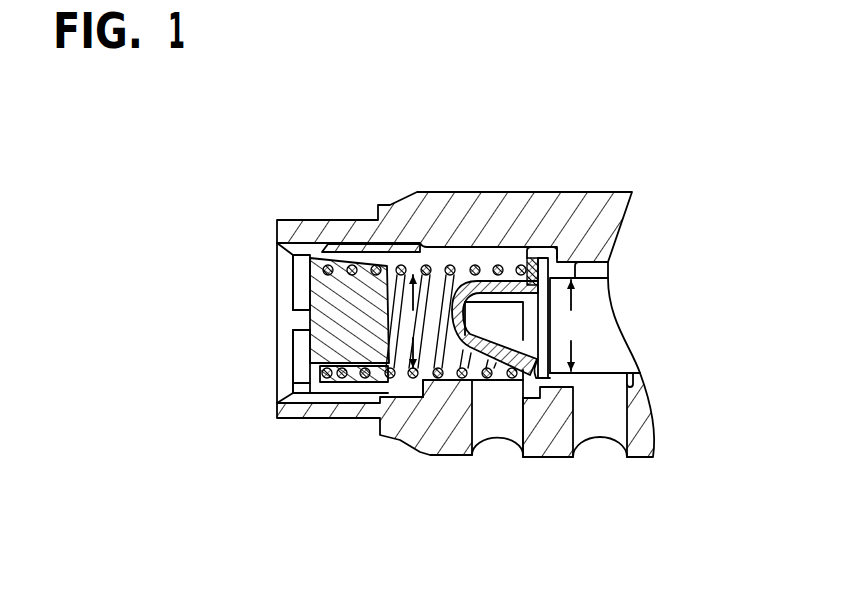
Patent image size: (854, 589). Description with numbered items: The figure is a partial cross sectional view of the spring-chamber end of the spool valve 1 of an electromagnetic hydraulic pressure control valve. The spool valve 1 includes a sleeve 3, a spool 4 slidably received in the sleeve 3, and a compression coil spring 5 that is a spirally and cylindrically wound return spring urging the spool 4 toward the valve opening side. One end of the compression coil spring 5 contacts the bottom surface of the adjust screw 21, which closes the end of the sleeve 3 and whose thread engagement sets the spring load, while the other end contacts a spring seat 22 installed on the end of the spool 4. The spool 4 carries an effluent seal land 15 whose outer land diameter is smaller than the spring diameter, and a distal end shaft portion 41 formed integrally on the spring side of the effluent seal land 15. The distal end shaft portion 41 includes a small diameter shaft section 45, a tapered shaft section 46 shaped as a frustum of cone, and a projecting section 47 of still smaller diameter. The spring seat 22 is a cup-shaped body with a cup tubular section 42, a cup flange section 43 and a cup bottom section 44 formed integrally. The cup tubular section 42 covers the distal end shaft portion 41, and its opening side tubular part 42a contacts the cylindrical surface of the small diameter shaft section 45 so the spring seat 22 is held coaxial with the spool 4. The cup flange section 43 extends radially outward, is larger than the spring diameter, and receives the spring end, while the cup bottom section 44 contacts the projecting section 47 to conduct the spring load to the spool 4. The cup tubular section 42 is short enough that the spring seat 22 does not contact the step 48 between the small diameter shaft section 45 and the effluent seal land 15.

The spool valve 1 is at (327, 186).
The sleeve 3 is at (406, 416).
The spool 4 is at (636, 317).
The compression coil spring 5 is at (372, 243).
The effluent seal land 15 is at (600, 318).
The adjust screw 21 is at (352, 348).
The spring seat 22 is at (640, 122).
The distal end shaft portion 41 is at (572, 515).
The cup tubular section 42 is at (489, 281).
The opening side tubular part 42a is at (528, 256).
The cup flange section 43 is at (556, 256).
The cup bottom section 44 is at (455, 262).
The small diameter shaft section 45 is at (535, 345).
The tapered shaft section 46 is at (508, 350).
The projecting section 47 is at (452, 382).
The step 48 is at (547, 368).